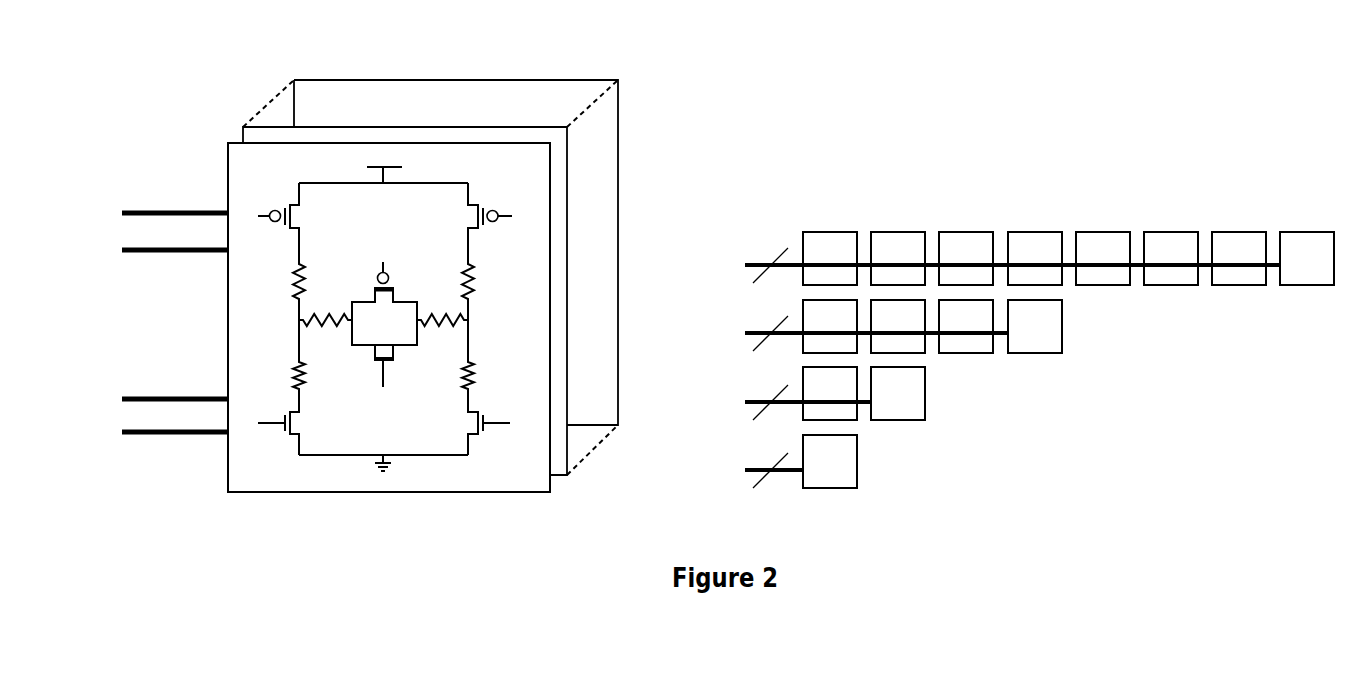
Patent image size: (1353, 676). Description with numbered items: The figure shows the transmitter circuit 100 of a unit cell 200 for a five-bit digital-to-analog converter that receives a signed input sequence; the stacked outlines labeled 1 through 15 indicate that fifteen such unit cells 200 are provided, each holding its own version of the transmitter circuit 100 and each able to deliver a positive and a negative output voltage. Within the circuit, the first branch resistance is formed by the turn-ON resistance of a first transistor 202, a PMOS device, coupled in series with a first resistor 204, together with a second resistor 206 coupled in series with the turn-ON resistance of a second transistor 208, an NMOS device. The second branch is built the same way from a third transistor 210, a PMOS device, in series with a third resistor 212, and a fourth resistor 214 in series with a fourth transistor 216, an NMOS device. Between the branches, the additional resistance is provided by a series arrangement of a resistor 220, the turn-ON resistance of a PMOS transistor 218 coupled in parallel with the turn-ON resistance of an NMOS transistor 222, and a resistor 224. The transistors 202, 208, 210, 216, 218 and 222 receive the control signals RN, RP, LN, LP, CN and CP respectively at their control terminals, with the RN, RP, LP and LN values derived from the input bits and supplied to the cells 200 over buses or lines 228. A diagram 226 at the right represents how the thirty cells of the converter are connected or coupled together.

The first bit slice 1 is at (377, 301).
The last bit slice 15 is at (430, 264).
The transmitter circuit 100 is at (277, 507).
The unit cell 200 is at (451, 492).
The first transistor 202 is at (290, 221).
The first resistor 204 is at (276, 309).
The second resistor 206 is at (492, 371).
The second transistor 208 is at (474, 424).
The third transistor 210 is at (474, 221).
The third resistor 212 is at (495, 309).
The fourth resistor 214 is at (276, 371).
The fourth transistor 216 is at (295, 424).
The PMOS transistor 218 is at (395, 291).
The resistor 220 is at (325, 306).
The NMOS transistor 222 is at (361, 381).
The resistor 224 is at (442, 334).
The diagram 226 is at (1017, 394).
The buses or lines 228 is at (167, 454).